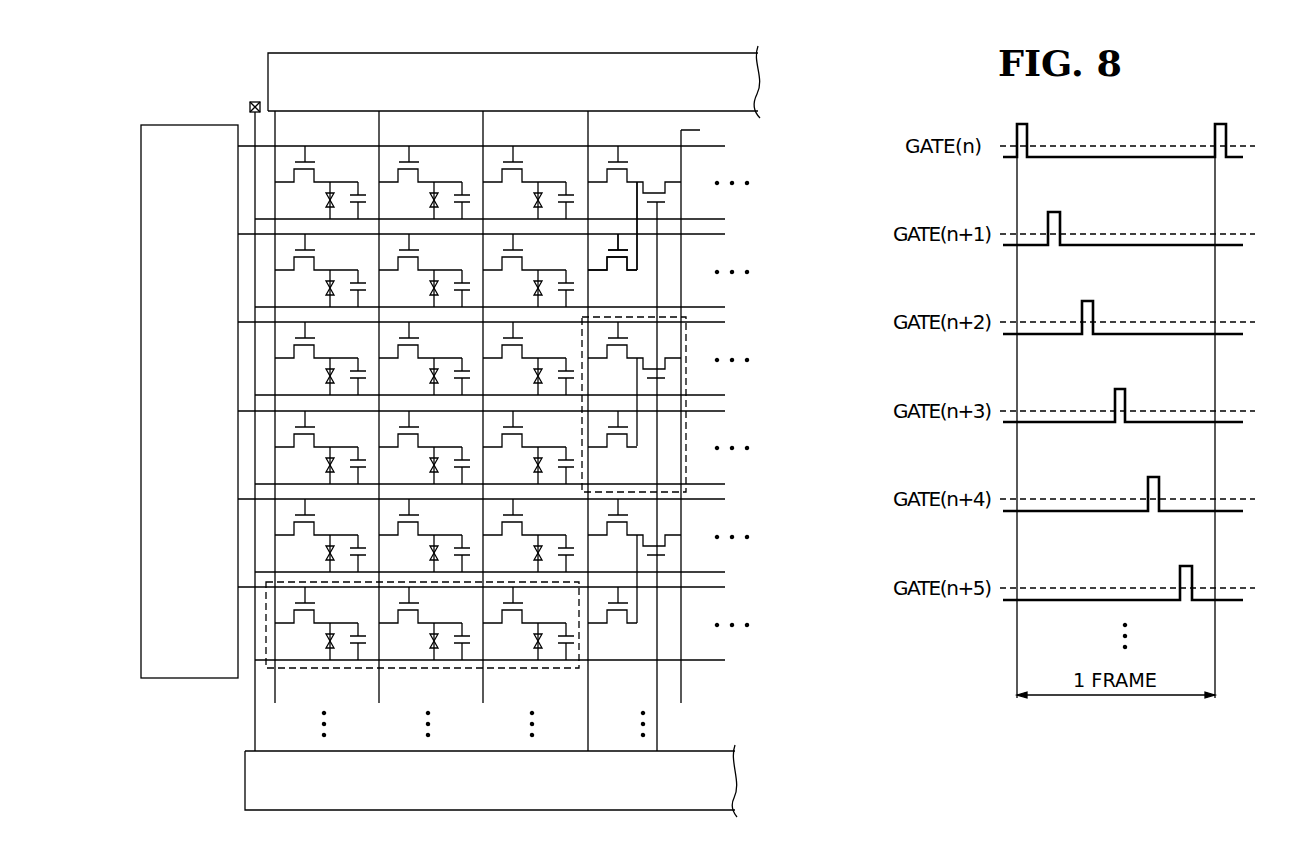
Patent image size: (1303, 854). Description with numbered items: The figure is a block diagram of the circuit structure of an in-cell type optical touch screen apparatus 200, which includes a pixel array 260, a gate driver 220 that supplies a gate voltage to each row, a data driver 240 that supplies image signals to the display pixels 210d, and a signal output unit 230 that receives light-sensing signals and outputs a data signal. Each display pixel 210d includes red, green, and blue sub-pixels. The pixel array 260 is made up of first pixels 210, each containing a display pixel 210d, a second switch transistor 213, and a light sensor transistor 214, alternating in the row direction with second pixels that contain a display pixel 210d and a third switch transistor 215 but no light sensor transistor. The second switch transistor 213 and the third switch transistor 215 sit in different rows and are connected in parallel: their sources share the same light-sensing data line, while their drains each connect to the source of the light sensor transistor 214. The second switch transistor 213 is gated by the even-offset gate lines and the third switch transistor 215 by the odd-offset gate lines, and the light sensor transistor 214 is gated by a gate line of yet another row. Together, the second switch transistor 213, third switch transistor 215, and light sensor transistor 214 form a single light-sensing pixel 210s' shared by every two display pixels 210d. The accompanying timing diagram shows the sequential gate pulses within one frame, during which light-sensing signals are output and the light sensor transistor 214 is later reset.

The in-cell type optical touch screen apparatus 200 is at (134, 80).
The first pixel 210 is at (538, 182).
The light-sensing pixel 210s' is at (678, 404).
The display pixel 210d is at (510, 642).
The second switch transistor 213 is at (617, 195).
The light sensor transistor 214 is at (681, 201).
The third switch transistor 215 is at (624, 279).
The gate driver 220 is at (188, 678).
The signal output unit 230 is at (245, 782).
The data driver 240 is at (268, 67).
The pixel array 260 is at (555, 426).